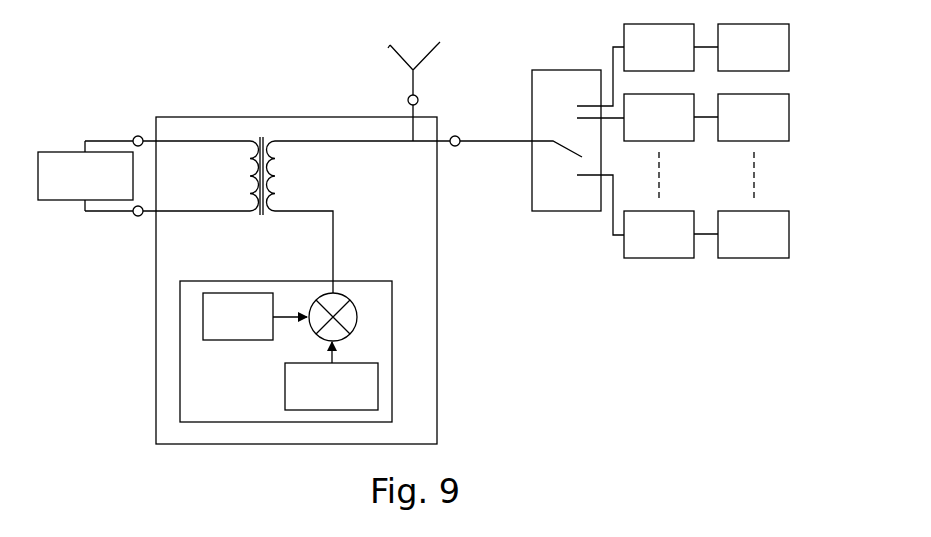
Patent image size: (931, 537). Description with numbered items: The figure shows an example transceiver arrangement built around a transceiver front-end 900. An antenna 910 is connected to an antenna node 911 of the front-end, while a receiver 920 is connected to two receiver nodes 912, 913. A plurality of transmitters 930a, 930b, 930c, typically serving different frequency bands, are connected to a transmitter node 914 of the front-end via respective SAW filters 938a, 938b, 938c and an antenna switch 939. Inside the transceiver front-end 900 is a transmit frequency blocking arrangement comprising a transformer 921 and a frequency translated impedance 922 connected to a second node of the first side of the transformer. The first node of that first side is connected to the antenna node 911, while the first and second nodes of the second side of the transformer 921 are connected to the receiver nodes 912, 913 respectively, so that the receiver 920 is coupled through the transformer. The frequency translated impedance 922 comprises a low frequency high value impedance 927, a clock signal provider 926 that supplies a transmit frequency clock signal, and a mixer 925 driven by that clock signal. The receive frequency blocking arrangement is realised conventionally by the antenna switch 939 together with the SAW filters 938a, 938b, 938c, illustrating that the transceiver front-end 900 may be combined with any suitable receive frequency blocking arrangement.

The transceiver front-end 900 is at (215, 117).
The antenna 910 is at (396, 57).
The antenna node 911 is at (420, 100).
The receiver node 912 is at (134, 138).
The receiver node 913 is at (136, 216).
The transmitter node 914 is at (456, 147).
The receiver 920 is at (85, 176).
The transformer 921 is at (281, 177).
The frequency translated impedance 922 is at (345, 314).
The mixer 925 is at (318, 333).
The clock signal provider 926 is at (255, 315).
The low frequency high value impedance 927 is at (331, 376).
The transmitter 930a is at (753, 47).
The transmitter 930b is at (753, 117).
The transmitter 930c is at (753, 234).
The SAW filter 938a is at (659, 47).
The SAW filter 938b is at (659, 117).
The SAW filter 938c is at (659, 234).
The antenna switch 939 is at (578, 141).